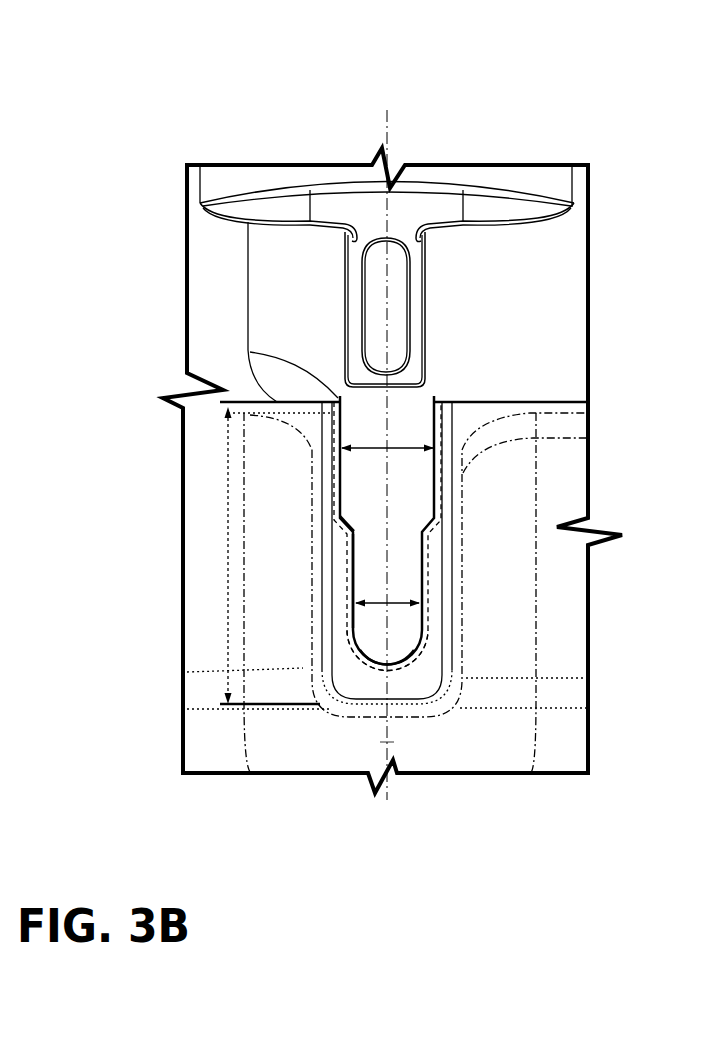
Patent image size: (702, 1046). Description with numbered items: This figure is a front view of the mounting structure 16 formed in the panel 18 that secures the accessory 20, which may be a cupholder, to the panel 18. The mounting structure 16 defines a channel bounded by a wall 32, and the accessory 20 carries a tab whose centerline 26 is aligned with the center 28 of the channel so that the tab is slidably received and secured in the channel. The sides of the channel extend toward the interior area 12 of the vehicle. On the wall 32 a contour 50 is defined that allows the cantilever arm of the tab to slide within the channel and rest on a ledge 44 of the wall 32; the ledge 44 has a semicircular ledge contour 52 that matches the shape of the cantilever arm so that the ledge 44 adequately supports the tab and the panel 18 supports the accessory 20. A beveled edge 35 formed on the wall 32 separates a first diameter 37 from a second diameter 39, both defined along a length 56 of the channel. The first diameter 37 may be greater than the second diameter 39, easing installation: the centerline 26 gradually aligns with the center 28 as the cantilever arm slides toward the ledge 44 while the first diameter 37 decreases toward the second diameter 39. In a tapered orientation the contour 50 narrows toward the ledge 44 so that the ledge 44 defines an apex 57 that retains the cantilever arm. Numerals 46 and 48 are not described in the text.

The accessory 20 is at (213, 157).
The centerline 26 is at (387, 130).
The first diameter 37 is at (403, 447).
The panel 18 is at (540, 400).
The transition surface 46 is at (250, 352).
The interior area 12 is at (418, 478).
The length 56 is at (227, 482).
The second diameter 39 is at (400, 600).
The beveled edge 35 is at (345, 530).
The neck width 48 is at (423, 603).
The contour 50 is at (353, 583).
The mounting structure 16 is at (470, 683).
The wall 32 is at (343, 677).
The ledge contour 52 is at (378, 672).
The center 28 is at (386, 742).
The apex 57 is at (390, 673).
The ledge 44 is at (408, 668).